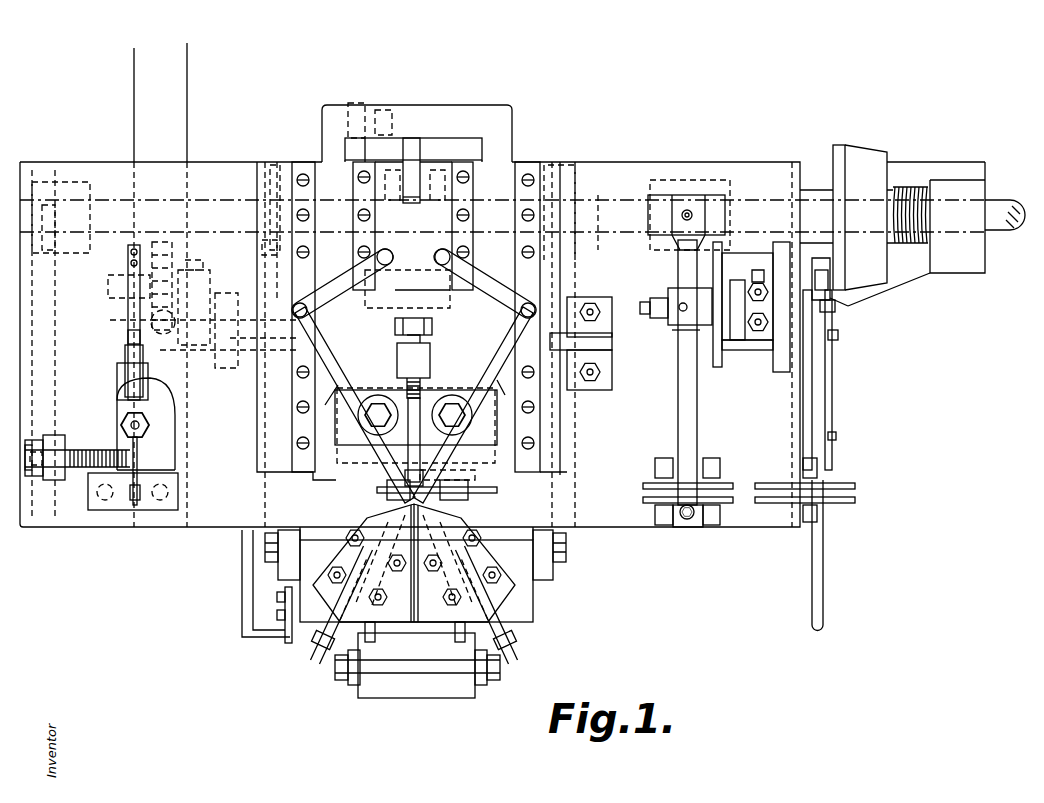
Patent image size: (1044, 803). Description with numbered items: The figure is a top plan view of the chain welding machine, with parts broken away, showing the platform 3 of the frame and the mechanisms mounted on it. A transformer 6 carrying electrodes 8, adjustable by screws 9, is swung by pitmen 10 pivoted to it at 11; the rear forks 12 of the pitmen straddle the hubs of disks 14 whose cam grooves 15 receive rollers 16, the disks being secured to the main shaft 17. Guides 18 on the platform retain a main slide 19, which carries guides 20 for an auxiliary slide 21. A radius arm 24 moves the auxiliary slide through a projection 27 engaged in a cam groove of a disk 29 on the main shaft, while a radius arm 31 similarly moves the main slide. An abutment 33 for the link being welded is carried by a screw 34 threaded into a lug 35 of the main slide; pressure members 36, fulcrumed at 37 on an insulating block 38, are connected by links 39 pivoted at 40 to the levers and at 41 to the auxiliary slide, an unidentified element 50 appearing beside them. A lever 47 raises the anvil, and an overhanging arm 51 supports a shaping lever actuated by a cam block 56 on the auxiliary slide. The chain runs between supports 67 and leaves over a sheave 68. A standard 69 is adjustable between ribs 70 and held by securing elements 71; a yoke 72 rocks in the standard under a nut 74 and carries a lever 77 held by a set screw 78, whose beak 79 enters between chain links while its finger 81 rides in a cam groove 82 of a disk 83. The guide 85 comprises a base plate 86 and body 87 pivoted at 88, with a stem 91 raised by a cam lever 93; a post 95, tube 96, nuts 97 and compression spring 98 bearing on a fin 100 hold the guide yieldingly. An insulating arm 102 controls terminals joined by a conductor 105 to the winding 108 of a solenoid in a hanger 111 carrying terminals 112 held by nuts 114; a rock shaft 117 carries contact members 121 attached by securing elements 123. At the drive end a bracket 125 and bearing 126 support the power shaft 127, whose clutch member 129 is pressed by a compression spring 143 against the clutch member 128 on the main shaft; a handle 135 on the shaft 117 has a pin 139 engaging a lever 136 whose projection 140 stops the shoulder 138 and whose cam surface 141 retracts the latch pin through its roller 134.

The platform 3 is at (640, 162).
The transformer 6 is at (546, 626).
The electrodes 8 is at (380, 500).
The screws 9 is at (318, 660).
The pitmen 10 is at (277, 575).
The pivot 11 is at (265, 548).
The forks 12 is at (548, 175).
The disks 14 is at (258, 162).
The cam grooves 15 is at (272, 165).
The rollers 16 is at (262, 250).
The main shaft 17 is at (598, 197).
The guides 18 is at (290, 432).
The main slide 19 is at (503, 127).
The guides 20 is at (357, 228).
The auxiliary slide 21 is at (445, 162).
The radius arm 24 is at (415, 140).
The projection 27 is at (347, 150).
The disk 29 is at (380, 138).
The radius arm 31 is at (357, 103).
The abutment 33 is at (410, 440).
The screw 34 is at (427, 322).
The lug 35 is at (403, 355).
The pressure members 36 is at (414, 403).
The fulcrum 37 is at (375, 410).
The block of insulating material 38 is at (350, 437).
The links 39 is at (488, 262).
The pivot 40 is at (312, 310).
The pivot 41 is at (442, 250).
The lever 47 is at (468, 380).
The cross piece 50 is at (462, 252).
The overhanging arm 51 is at (600, 345).
The cam block 56 is at (410, 272).
The guides or supports 67 is at (643, 483).
The sheave 68 is at (853, 493).
The standard 69 is at (758, 345).
The ribs 70 is at (773, 242).
The securing elements 71 is at (758, 283).
The yoke 72 is at (690, 332).
The nut 74 is at (740, 283).
The lever 77 is at (683, 402).
The set screw 78 is at (648, 305).
The thinned beak 79 is at (682, 520).
The reduced finger 81 is at (650, 213).
The cam groove 82 is at (688, 210).
The disk 83 is at (720, 200).
The guide 85 is at (90, 508).
The base plate 86 is at (163, 425).
The upstanding body 87 is at (170, 512).
The pivot 88 is at (140, 423).
The stem 91 is at (138, 508).
The lever 93 is at (140, 447).
The post 95 is at (57, 505).
The tube 96 is at (85, 450).
The nuts 97 is at (42, 437).
The compression spring 98 is at (100, 467).
The fin 100 is at (128, 508).
The arm 102 is at (124, 350).
The conductor 105 is at (134, 102).
The winding 108 is at (160, 245).
The hanger 111 is at (110, 295).
The terminals 112 is at (200, 268).
The nuts 114 is at (128, 268).
The shaft 117 is at (838, 335).
The contact members 121 is at (170, 343).
The securing elements 123 is at (125, 337).
The extension or bracket 125 is at (907, 167).
The bearing 126 is at (983, 182).
The shaft 127 is at (1003, 205).
The clutch member 128 is at (838, 145).
The clutch member 129 is at (868, 160).
The roller 134 is at (832, 275).
The operating member or handle 135 is at (820, 580).
The lever 136 is at (833, 402).
The shoulder 138 is at (850, 298).
The pin 139 is at (836, 437).
The projection 140 is at (857, 308).
The cam surface 141 is at (818, 270).
The compression spring 143 is at (915, 188).